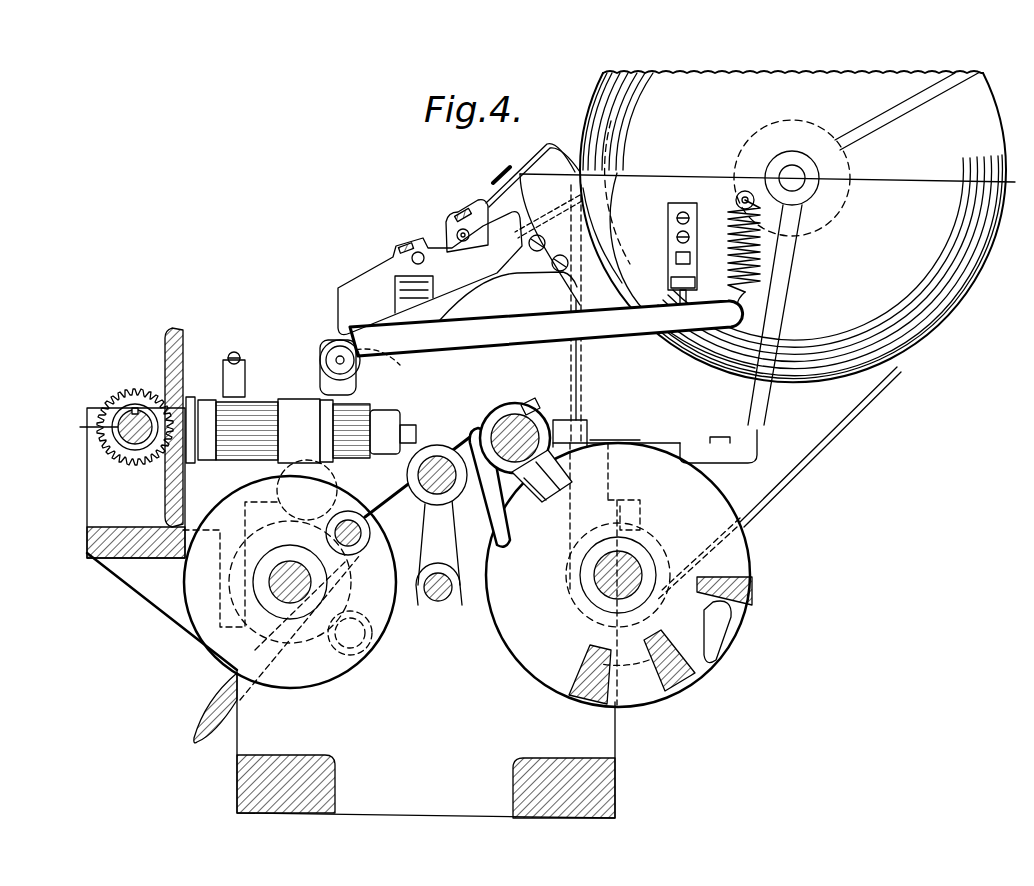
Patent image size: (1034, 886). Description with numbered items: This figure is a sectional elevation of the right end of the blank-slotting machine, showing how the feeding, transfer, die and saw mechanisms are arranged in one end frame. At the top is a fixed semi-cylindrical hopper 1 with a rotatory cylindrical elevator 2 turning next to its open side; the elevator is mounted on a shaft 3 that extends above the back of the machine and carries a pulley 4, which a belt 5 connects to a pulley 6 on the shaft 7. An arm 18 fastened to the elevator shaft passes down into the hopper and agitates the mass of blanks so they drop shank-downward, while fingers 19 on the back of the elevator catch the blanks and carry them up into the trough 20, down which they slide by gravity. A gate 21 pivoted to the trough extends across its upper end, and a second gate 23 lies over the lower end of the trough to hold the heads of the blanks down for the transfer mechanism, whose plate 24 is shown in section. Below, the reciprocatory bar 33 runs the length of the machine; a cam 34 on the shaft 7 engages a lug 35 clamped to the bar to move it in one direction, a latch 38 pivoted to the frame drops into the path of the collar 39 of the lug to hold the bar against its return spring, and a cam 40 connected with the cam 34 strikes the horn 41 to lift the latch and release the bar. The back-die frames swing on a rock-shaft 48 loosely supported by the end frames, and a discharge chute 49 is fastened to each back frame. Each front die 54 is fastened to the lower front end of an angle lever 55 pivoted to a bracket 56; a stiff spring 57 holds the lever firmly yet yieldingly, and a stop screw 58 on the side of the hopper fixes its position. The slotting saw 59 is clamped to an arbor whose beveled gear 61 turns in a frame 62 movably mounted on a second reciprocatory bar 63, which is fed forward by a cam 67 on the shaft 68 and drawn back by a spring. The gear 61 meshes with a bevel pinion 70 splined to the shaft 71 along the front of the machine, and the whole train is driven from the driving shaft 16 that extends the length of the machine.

The hopper 1 is at (706, 175).
The elevator 2 is at (793, 226).
The shaft 3 is at (800, 168).
The pulley 4 is at (948, 312).
The belt 5 is at (895, 370).
The pulley 6 is at (588, 580).
The shaft 7 is at (596, 585).
The driving shaft 16 is at (432, 505).
The arm 18 is at (906, 118).
The fingers 19 is at (616, 130).
The trough 20 is at (486, 207).
The gate 21 is at (515, 170).
The gate 23 is at (362, 282).
The plate 24 is at (335, 338).
The reciprocatory bar 33 is at (556, 405).
The cam 34 is at (752, 595).
The lug 35 is at (590, 442).
The latch 38 is at (503, 412).
The collar 39 is at (565, 418).
The cam 40 is at (722, 650).
The horn 41 is at (503, 553).
The rock-shaft 48 is at (362, 655).
The discharge chute 49 is at (210, 695).
The front die 54 is at (310, 398).
The angle lever 55 is at (538, 322).
The bracket 56 is at (360, 350).
The stiff spring 57 is at (762, 250).
The stop screw 58 is at (668, 250).
The slotting saw 59 is at (280, 475).
The beveled gear 61 is at (185, 352).
The frame 62 is at (272, 395).
The reciprocatory bar 63 is at (300, 495).
The cam 67 is at (185, 585).
The shaft 68 is at (268, 590).
The bevel pinion 70 is at (133, 393).
The shaft 71 is at (95, 428).